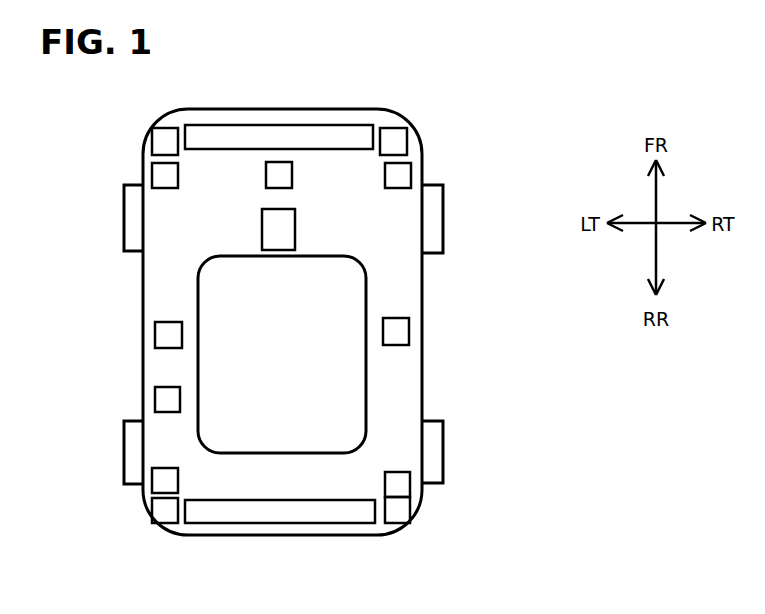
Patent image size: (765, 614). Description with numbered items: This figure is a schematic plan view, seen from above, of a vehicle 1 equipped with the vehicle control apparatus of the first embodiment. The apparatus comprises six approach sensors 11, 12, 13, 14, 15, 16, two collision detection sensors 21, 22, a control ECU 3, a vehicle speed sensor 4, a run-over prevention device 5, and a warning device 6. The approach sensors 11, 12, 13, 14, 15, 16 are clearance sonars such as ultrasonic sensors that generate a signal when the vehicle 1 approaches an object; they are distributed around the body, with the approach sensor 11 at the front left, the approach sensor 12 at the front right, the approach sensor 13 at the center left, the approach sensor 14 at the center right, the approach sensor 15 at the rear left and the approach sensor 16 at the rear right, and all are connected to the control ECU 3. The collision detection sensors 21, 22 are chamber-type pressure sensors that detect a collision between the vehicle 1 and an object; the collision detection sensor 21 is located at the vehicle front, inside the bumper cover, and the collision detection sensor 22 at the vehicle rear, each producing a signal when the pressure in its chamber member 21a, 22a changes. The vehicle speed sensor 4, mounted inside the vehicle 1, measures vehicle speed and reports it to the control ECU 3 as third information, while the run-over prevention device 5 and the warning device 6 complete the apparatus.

The vehicle 1 is at (405, 108).
The control ECU 3 is at (288, 232).
The vehicle speed sensor 4 is at (165, 398).
The run-over prevention device 5 is at (165, 176).
The warning device 6 is at (276, 170).
The approach sensor 11 is at (165, 140).
The approach sensor 12 is at (395, 140).
The approach sensor 13 is at (168, 335).
The approach sensor 14 is at (398, 332).
The approach sensor 15 is at (165, 512).
The approach sensor 16 is at (400, 512).
The collision detection sensor 21 is at (286, 109).
The chamber member 21a is at (309, 133).
The collision detection sensor 22 is at (280, 541).
The chamber member 22a is at (282, 514).